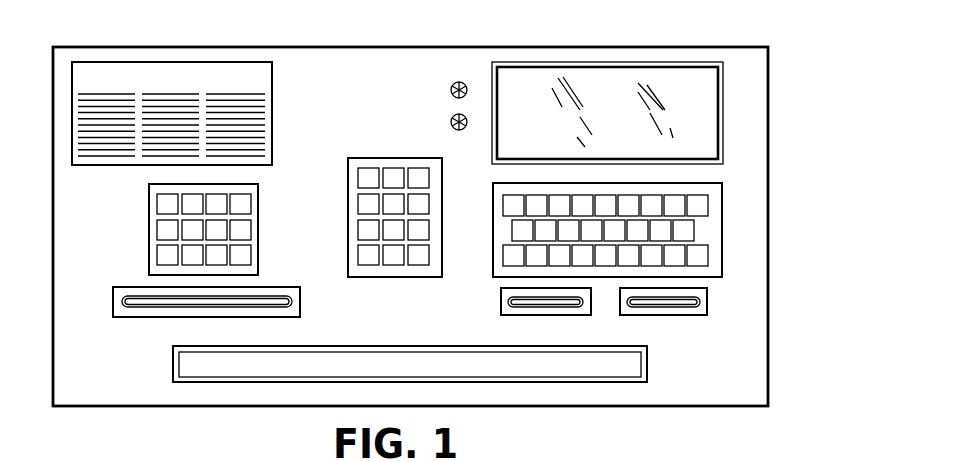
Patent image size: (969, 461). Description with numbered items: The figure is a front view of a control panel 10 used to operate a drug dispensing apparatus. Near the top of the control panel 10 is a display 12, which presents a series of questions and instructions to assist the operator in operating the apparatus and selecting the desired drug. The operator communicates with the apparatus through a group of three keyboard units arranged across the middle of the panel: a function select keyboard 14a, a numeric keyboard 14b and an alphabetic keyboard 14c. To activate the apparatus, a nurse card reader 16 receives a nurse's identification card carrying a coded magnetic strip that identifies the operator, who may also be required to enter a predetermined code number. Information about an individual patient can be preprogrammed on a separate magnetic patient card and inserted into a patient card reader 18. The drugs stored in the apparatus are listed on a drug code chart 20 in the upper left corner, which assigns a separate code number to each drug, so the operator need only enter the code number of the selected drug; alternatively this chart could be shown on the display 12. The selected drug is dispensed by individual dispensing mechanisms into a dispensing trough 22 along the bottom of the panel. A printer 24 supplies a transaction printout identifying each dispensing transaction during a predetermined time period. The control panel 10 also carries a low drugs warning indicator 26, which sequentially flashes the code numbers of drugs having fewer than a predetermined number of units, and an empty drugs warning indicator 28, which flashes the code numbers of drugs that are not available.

The control panel 10 is at (792, 126).
The display 12 is at (636, 77).
The function select keyboard 14a is at (157, 203).
The numeric keyboard 14b is at (356, 203).
The alphabetic keyboard 14c is at (712, 222).
The nurse card reader 16 is at (708, 304).
The patient card reader 18 is at (501, 302).
The drug code chart 20 is at (255, 68).
The dispensing trough 22 is at (598, 373).
The printer 24 is at (114, 288).
The low drugs warning indicator 26 is at (453, 84).
The empty drugs warning indicator 28 is at (464, 115).